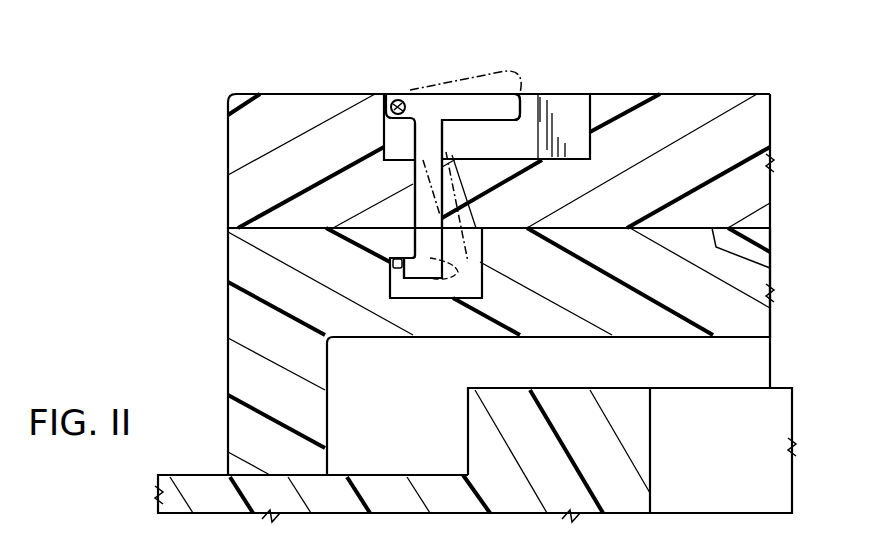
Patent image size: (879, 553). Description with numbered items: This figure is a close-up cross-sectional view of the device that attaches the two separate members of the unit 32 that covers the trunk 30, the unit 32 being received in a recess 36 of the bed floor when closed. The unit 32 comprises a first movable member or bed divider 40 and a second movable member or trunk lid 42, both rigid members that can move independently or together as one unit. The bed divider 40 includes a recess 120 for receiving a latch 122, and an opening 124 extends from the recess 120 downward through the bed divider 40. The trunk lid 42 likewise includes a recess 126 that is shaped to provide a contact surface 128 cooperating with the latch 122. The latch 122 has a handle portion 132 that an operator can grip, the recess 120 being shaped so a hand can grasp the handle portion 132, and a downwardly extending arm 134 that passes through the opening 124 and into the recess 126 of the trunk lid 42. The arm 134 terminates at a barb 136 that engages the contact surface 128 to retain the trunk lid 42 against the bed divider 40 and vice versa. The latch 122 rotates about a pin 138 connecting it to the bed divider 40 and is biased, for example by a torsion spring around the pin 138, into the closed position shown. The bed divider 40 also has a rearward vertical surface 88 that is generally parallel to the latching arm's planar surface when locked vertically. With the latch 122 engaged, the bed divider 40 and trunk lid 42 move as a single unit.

The trunk 30 is at (776, 437).
The unit 32 is at (205, 113).
The recess 36 is at (373, 473).
The first movable member 40 is at (701, 93).
The second movable member 42 is at (224, 270).
The rearward vertical surface 88 is at (752, 258).
The recess 120 is at (570, 110).
The latch 122 is at (490, 96).
The opening 124 is at (463, 182).
The recess 126 is at (458, 288).
The contact surface 128 is at (398, 268).
The handle portion 132 is at (517, 98).
The downwardly extending arm 134 is at (425, 138).
The barb 136 is at (409, 270).
The pin 138 is at (394, 101).